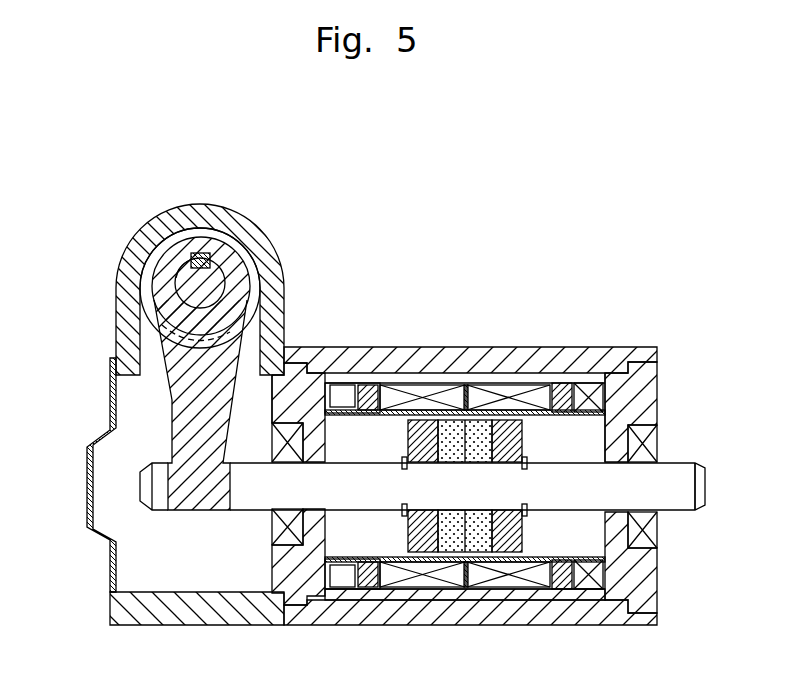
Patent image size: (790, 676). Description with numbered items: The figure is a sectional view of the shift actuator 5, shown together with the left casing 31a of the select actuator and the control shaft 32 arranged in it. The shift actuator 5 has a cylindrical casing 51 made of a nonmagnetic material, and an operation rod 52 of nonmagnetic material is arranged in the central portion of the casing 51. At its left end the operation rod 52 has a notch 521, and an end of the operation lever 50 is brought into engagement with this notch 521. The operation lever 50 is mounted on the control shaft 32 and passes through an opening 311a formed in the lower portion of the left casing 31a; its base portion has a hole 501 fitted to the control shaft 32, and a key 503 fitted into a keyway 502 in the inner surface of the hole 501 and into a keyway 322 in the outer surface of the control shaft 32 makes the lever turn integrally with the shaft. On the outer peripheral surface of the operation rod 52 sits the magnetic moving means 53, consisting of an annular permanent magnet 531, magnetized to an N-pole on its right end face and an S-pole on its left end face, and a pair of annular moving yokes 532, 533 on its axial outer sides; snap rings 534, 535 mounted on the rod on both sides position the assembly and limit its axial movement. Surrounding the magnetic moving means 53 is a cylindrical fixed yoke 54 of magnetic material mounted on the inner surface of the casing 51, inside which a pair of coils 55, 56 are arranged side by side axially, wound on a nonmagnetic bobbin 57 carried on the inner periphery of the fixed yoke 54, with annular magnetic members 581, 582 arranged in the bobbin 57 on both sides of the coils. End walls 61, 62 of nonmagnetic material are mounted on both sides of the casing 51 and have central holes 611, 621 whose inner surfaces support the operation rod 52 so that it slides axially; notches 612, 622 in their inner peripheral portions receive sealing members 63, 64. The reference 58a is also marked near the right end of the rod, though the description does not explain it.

The shift actuator 5 is at (492, 318).
The left casing 31a is at (212, 203).
The opening 311a is at (150, 342).
The control shaft 32 is at (177, 290).
The keyway 322 is at (188, 273).
The operation lever 50 is at (172, 425).
The hole 501 is at (240, 277).
The keyway 502 is at (207, 262).
The key 503 is at (199, 253).
The casing 51 is at (552, 347).
The operation rod 52 is at (703, 470).
The notch 521 is at (182, 510).
The magnetic moving means 53 is at (464, 486).
The permanent magnet 531 is at (468, 463).
The moving yoke 532 is at (524, 469).
The moving yoke 533 is at (432, 463).
The snap ring 534 is at (527, 462).
The snap ring 535 is at (402, 463).
The fixed yoke 54 is at (407, 383).
The coil 55 is at (522, 385).
The coil 56 is at (440, 385).
The bobbin 57 is at (468, 385).
The circuit board 58a is at (669, 486).
The magnetic member 581 is at (600, 383).
The magnetic member 582 is at (347, 383).
The end wall 61 is at (653, 382).
The hole 611 is at (618, 512).
The notch 612 is at (638, 422).
The end wall 62 is at (290, 398).
The hole 621 is at (293, 495).
The notch 622 is at (290, 408).
The sealing member 63 is at (653, 448).
The sealing member 64 is at (288, 443).